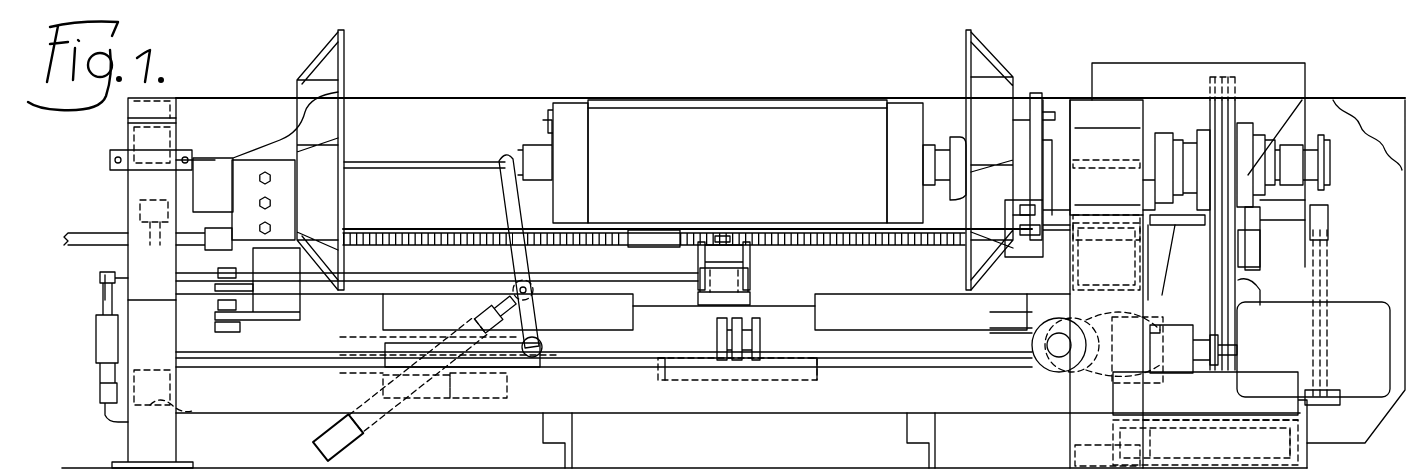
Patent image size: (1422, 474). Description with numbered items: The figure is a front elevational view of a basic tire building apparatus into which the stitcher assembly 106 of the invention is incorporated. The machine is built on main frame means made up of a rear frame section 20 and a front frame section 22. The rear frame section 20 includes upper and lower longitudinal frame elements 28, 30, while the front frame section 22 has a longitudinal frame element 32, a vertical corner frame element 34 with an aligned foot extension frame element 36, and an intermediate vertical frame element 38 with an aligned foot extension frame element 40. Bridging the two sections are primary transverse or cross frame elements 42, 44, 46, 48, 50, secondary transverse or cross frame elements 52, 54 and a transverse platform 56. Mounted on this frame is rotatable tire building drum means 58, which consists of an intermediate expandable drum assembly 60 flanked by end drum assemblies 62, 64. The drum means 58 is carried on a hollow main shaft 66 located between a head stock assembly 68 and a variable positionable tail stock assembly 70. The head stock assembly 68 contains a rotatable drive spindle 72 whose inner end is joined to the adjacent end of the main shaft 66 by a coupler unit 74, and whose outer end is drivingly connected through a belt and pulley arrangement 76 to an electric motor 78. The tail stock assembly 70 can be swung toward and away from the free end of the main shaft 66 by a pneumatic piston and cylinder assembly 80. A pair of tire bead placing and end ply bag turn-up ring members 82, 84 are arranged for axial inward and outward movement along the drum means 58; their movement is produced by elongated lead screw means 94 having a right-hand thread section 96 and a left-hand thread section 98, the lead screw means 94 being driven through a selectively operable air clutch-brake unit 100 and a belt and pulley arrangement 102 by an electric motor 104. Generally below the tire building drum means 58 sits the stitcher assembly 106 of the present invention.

The rear frame section 20 is at (503, 94).
The front frame section 22 is at (642, 419).
The upper longitudinal frame element 28 is at (430, 88).
The lower longitudinal frame element 30 is at (796, 304).
The longitudinal frame element 32 is at (825, 400).
The vertical corner frame element 34 is at (145, 340).
The foot extension frame element 36 is at (137, 432).
The intermediate vertical frame element 38 is at (1120, 300).
The foot extension frame element 40 is at (1072, 428).
The primary transverse frame element 42 is at (180, 125).
The primary transverse frame element 44 is at (175, 405).
The primary transverse frame element 46 is at (488, 400).
The primary transverse frame element 48 is at (1147, 305).
The primary transverse frame element 50 is at (1084, 463).
The secondary transverse frame element 52 is at (571, 428).
The secondary transverse frame element 54 is at (931, 425).
The transverse platform 56 is at (1300, 455).
The tire building drum means 58 is at (791, 94).
The intermediate expandable drum assembly 60 is at (670, 117).
The end drum assembly 62 is at (574, 112).
The end drum assembly 64 is at (906, 115).
The hollow main shaft 66 is at (536, 143).
The head stock assembly 68 is at (1063, 109).
The tail stock assembly 70 is at (498, 201).
The drive spindle 72 is at (1165, 155).
The coupler unit 74 is at (960, 146).
The belt and pulley arrangement 76 is at (1247, 116).
The electric motor 78 is at (1376, 344).
The pneumatic piston and cylinder assembly 80 is at (469, 319).
The tire bead placing and end ply bag turn-up ring member 82 is at (345, 55).
The tire bead placing and end ply bag turn-up ring member 84 is at (966, 52).
The lead screw means 94 is at (638, 251).
The right-hand thread section 96 is at (878, 249).
The left-hand thread section 98 is at (455, 250).
The air clutch-brake unit 100 is at (1245, 281).
The belt and pulley arrangement 102 is at (1338, 291).
The electric motor 104 is at (1202, 322).
The stitcher assembly 106 is at (763, 395).